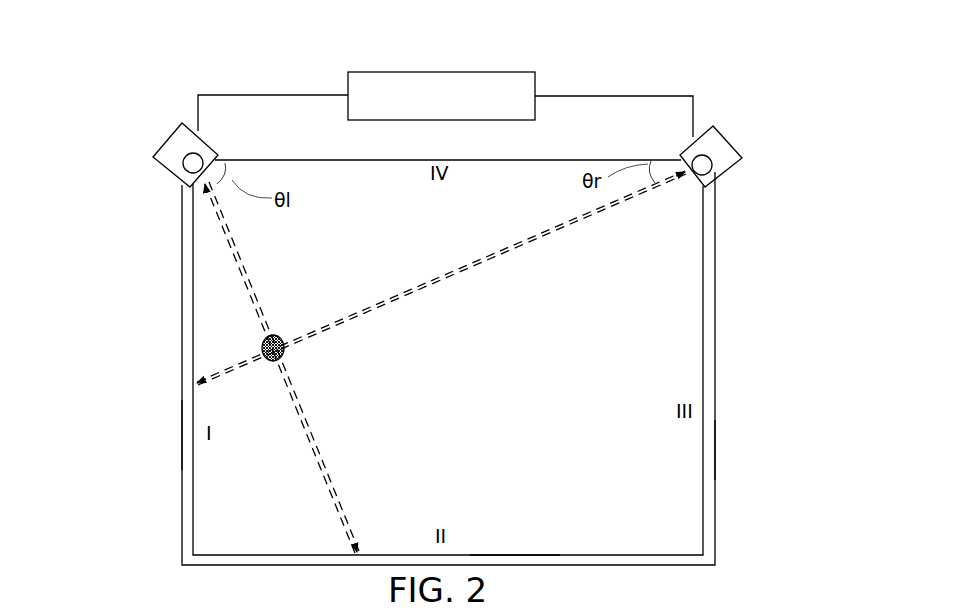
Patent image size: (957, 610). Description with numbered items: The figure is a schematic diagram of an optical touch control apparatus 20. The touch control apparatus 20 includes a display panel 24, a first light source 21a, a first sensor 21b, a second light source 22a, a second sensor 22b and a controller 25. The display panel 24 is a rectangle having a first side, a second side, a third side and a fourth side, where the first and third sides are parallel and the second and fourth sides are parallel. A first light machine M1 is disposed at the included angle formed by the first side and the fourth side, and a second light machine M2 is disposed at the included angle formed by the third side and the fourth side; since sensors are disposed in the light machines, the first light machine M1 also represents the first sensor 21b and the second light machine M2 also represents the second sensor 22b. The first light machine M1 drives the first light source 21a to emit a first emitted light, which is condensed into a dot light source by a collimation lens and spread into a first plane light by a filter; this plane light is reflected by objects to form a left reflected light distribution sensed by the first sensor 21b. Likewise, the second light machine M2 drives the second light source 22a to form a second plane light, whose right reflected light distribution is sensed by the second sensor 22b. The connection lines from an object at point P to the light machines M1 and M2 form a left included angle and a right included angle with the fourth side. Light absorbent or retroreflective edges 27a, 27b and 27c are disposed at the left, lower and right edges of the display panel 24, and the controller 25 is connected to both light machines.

The touch control apparatus 20 is at (231, 79).
The first light source 21a is at (175, 163).
The first sensor 21b is at (178, 178).
The second light source 22a is at (712, 168).
The second sensor 22b is at (708, 140).
The display panel 24 is at (672, 303).
The controller 25 is at (505, 95).
The light absorbent edge or retroreflective edge 27a is at (182, 420).
The light absorbent edge or retroreflective edge 27b is at (507, 553).
The light absorbent edge or retroreflective edge 27c is at (717, 445).
The first light machine M1 is at (138, 164).
The second light machine M2 is at (748, 135).
The pointed position P is at (441, 362).